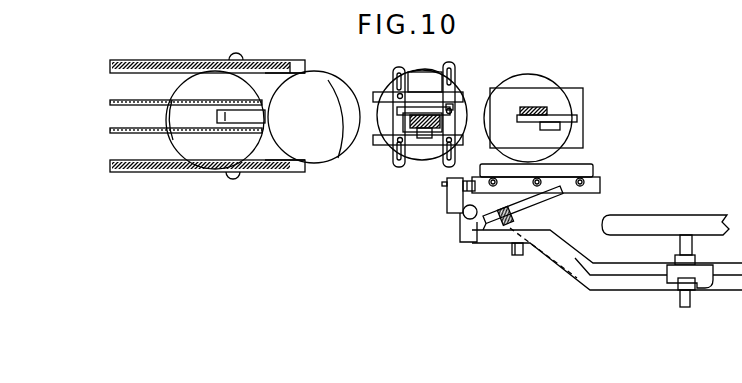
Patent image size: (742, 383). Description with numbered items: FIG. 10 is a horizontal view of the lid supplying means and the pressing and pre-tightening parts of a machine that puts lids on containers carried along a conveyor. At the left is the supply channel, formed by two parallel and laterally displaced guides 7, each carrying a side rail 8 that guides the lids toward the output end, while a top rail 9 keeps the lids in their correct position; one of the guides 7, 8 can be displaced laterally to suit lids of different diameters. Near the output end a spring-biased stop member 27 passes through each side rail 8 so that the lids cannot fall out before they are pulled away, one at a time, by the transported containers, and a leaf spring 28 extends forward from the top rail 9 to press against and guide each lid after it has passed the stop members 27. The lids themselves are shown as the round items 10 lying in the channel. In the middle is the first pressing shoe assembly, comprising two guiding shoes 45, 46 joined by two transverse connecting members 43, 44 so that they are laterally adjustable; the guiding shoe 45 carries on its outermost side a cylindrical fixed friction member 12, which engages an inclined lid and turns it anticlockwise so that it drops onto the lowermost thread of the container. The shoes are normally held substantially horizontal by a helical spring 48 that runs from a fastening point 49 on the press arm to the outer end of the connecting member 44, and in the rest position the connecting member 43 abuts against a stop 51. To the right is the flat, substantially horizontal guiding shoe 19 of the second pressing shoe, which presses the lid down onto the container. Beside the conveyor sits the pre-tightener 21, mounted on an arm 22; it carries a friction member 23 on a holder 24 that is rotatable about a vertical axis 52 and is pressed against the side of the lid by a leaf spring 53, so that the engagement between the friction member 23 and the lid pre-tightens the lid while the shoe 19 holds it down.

The guide 7 is at (112, 75).
The side rail 8 is at (138, 60).
The top rail 9 is at (112, 102).
The roller 10 is at (178, 143).
The cylindrical fixed friction member 12 is at (416, 70).
The guiding shoe 19 is at (580, 88).
The pre-tightener 21 is at (470, 228).
The arm 22 is at (550, 258).
The friction member 23 is at (595, 168).
The holder 24 is at (600, 186).
The stop member 27 is at (243, 64).
The leaf spring 28 is at (232, 123).
The transverse connecting member 43 is at (396, 67).
The transverse connecting member 44 is at (454, 68).
The guiding shoe 45 is at (376, 92).
The guiding shoe 46 is at (377, 145).
The helical spring 48 is at (452, 108).
The fastening point 49 is at (440, 122).
The stop 51 is at (397, 110).
The vertical axis 52 is at (465, 208).
The leaf spring 53 is at (532, 207).